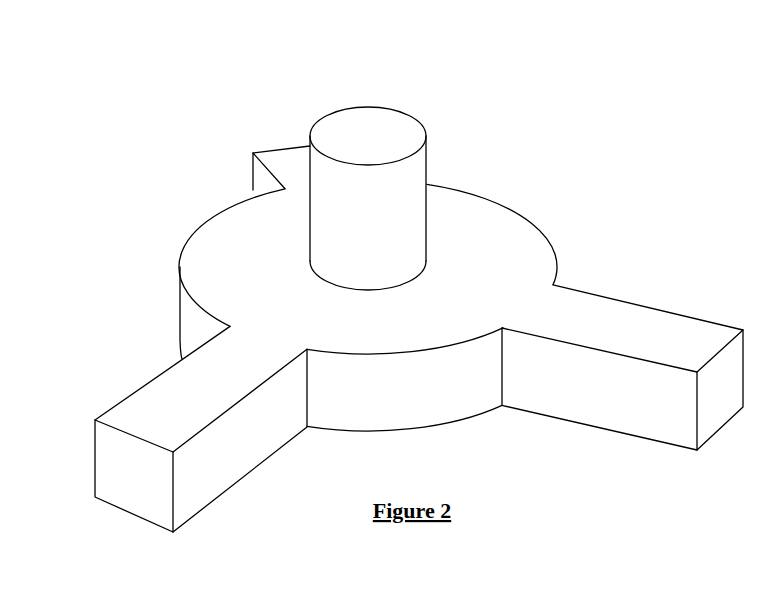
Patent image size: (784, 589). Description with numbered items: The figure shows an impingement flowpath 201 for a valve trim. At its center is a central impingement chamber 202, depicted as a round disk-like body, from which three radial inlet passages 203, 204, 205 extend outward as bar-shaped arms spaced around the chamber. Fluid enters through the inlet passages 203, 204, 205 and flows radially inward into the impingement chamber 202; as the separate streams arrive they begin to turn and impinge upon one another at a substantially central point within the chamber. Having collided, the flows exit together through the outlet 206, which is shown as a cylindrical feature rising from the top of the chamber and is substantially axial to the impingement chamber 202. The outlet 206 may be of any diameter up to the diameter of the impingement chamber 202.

The impingement flowpath 201 is at (578, 100).
The central impingement chamber 202 is at (510, 235).
The radial inlet passage 203 is at (629, 318).
The radial inlet passage 204 is at (153, 396).
The radial inlet passage 205 is at (277, 147).
The outlet 206 is at (388, 114).